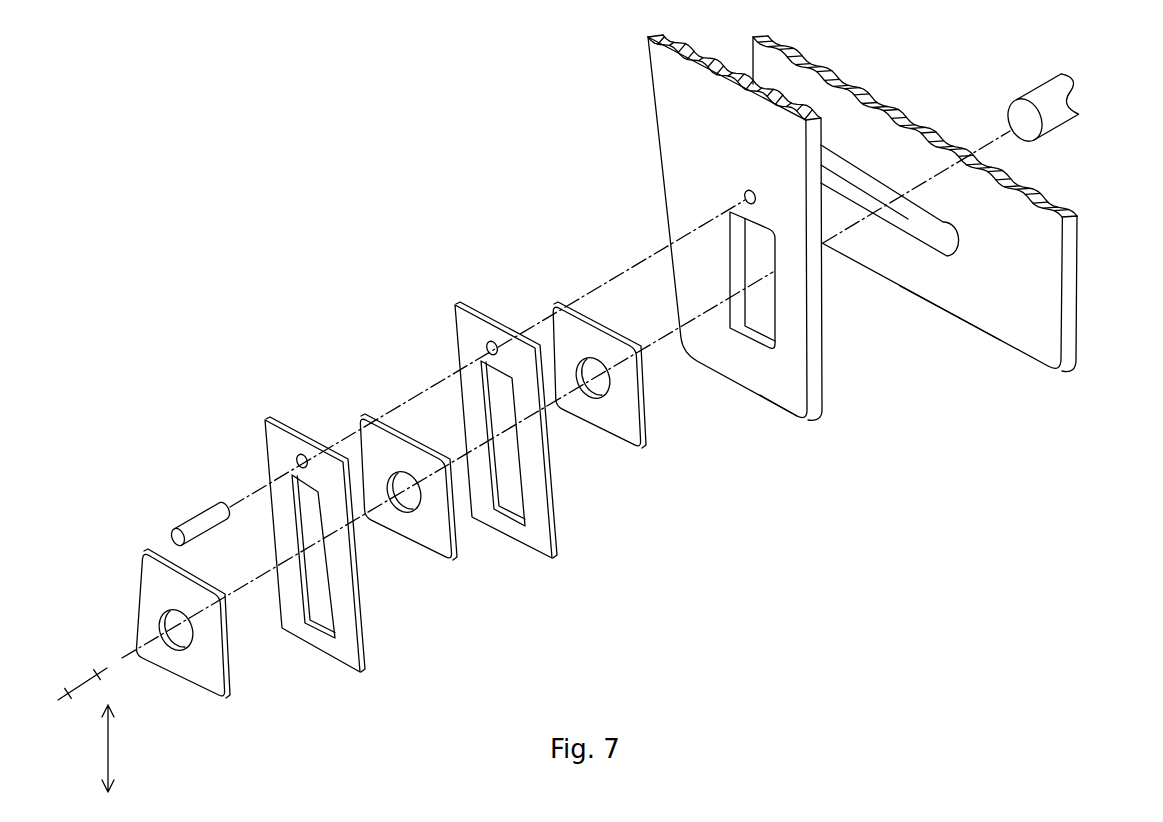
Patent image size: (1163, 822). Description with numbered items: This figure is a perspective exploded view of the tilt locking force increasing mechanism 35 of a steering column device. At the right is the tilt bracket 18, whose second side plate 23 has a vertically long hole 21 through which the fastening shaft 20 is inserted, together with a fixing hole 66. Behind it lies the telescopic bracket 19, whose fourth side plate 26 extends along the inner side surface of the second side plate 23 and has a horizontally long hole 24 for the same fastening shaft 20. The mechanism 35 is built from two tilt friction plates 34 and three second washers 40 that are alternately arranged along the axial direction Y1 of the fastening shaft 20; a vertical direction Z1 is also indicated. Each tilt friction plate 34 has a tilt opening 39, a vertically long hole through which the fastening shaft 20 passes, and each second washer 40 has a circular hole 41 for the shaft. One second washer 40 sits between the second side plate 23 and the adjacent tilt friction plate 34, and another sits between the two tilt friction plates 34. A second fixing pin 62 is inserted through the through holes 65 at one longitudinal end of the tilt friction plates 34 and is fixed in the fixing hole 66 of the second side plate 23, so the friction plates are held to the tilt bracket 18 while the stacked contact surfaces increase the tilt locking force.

The tilt bracket 18 is at (669, 84).
The telescopic bracket 19 is at (1080, 251).
The fastening shaft 20 is at (1042, 92).
The vertically long hole 21 is at (763, 318).
The second side plate 23 is at (792, 383).
The horizontally long hole 24 is at (928, 215).
The fourth side plate 26 is at (996, 315).
The tilt friction plate 34 is at (278, 433).
The tilt locking force increasing mechanism 35 is at (272, 383).
The tilt opening 39 is at (330, 614).
The second washer 40 is at (132, 573).
The circular hole 41 is at (175, 638).
The second fixing pin 62 is at (188, 527).
The through hole 65 is at (297, 458).
The fixing hole 66 is at (743, 195).
The axial direction Y1 is at (76, 675).
The Z1 direction Z1 is at (107, 747).